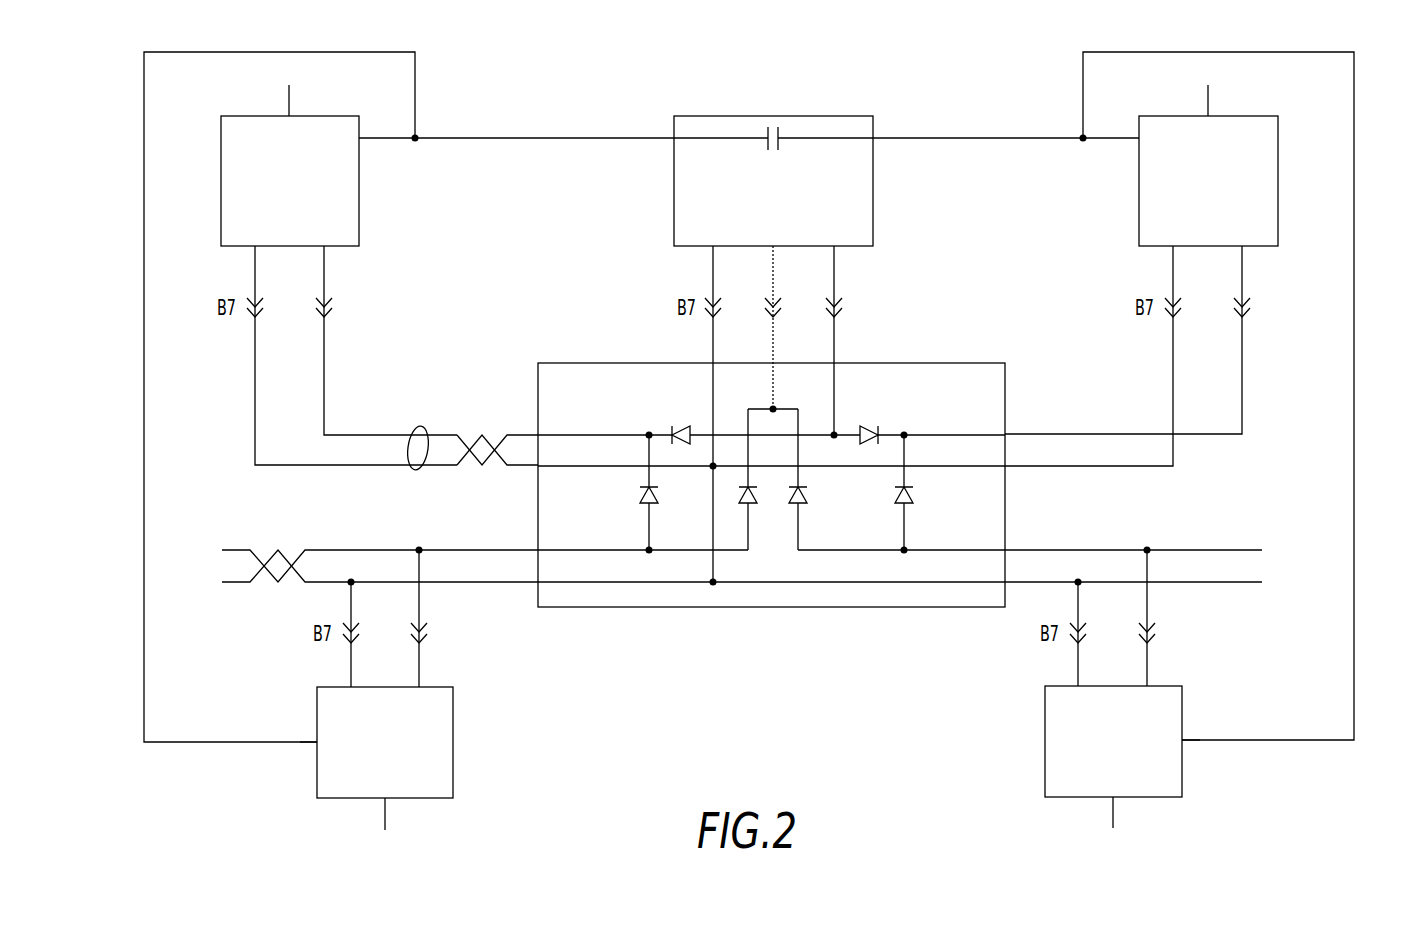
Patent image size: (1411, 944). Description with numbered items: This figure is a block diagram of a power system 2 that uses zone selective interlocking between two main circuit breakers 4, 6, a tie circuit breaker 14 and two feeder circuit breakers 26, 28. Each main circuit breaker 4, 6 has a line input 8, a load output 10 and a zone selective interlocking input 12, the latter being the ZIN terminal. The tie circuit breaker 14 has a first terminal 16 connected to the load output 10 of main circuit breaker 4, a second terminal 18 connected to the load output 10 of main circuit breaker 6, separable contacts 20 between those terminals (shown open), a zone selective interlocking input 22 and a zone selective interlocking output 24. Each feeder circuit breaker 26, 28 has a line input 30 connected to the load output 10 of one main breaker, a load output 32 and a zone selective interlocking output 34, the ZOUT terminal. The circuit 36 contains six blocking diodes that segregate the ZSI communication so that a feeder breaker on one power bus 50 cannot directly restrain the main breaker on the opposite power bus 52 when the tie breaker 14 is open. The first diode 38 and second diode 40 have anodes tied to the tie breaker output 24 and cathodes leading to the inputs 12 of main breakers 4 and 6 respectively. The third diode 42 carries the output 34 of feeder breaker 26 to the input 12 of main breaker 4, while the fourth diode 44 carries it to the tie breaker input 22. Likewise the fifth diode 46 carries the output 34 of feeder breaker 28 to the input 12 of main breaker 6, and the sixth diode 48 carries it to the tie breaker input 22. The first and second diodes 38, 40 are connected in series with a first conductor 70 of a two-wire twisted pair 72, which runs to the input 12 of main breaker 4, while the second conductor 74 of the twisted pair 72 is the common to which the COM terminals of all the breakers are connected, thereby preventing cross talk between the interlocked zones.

The power system 2 is at (541, 75).
The main circuit breaker 4 is at (221, 204).
The main circuit breaker 6 is at (1278, 204).
The line input 8 is at (288, 110).
The load output 10 is at (361, 141).
The zone selective interlocking input 12 is at (327, 249).
The tie circuit breaker 14 is at (674, 204).
The first terminal 16 is at (674, 138).
The second terminal 18 is at (873, 138).
The separable contacts 20 is at (773, 122).
The zone selective interlocking input 22 is at (775, 249).
The zone selective interlocking output 24 is at (836, 249).
The feeder circuit breaker 26 is at (455, 779).
The feeder circuit breaker 28 is at (1045, 778).
The line input 30 is at (317, 738).
The load output 32 is at (386, 808).
The zone selective interlocking output 34 is at (420, 686).
The circuit 36 is at (960, 363).
The first diode 38 is at (684, 425).
The second diode 40 is at (862, 425).
The third diode 42 is at (640, 496).
The fourth diode 44 is at (750, 505).
The fifth diode 46 is at (912, 495).
The sixth diode 48 is at (808, 495).
The power bus 50 is at (144, 608).
The power bus 52 is at (1357, 608).
The first conductor 70 is at (383, 432).
The two-wire twisted pair 72 is at (417, 428).
The second conductor 74 is at (352, 466).